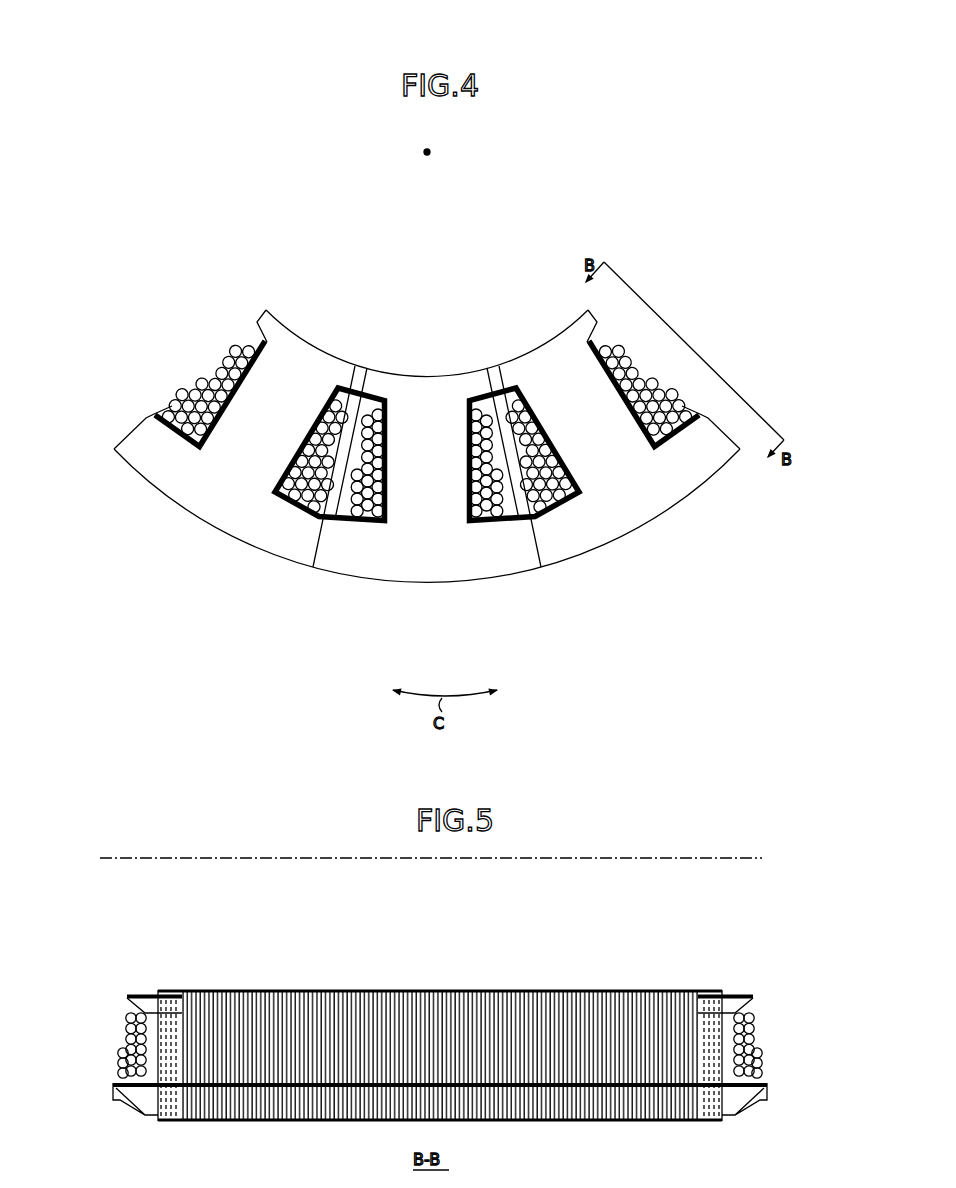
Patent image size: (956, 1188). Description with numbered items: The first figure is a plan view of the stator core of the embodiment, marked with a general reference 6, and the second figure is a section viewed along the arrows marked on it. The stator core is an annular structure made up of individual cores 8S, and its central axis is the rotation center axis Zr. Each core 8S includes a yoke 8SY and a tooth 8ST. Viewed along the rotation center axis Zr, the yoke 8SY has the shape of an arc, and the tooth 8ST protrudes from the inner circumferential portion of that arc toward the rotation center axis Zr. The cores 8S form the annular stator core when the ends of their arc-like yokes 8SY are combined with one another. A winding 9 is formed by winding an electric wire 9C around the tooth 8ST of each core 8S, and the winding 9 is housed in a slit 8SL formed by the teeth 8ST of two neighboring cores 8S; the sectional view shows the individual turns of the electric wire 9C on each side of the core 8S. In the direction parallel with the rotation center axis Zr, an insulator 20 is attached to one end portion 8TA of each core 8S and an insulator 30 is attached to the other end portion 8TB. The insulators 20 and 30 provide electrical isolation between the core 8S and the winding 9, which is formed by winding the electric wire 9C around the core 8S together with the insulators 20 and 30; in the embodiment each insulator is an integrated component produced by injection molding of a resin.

In FIG. 4, the stator 6 is at (499, 239).
In FIG. 4, the core 8S is at (414, 490).
In FIG. 5, the core 8S is at (441, 1016).
In FIG. 4, the yoke 8SY is at (150, 440).
In FIG. 4, the tooth 8ST is at (257, 433).
In FIG. 4, the slit 8SL is at (146, 420).
In FIG. 4, the winding 9 is at (427, 391).
In FIG. 5, the winding 9 is at (440, 1048).
In FIG. 4, the electric wire 9C is at (232, 354).
In FIG. 5, the electric wire 9C is at (125, 1070).
In FIG. 5, the insulator 20 is at (156, 1028).
In FIG. 5, the insulator 30 is at (728, 1028).
In FIG. 5, the one end portion 8TA is at (150, 1105).
In FIG. 5, the other end portion 8TB is at (730, 1105).
In FIG. 4, the rotation center axis Zr is at (434, 152).
In FIG. 5, the rotation center axis Zr is at (444, 859).